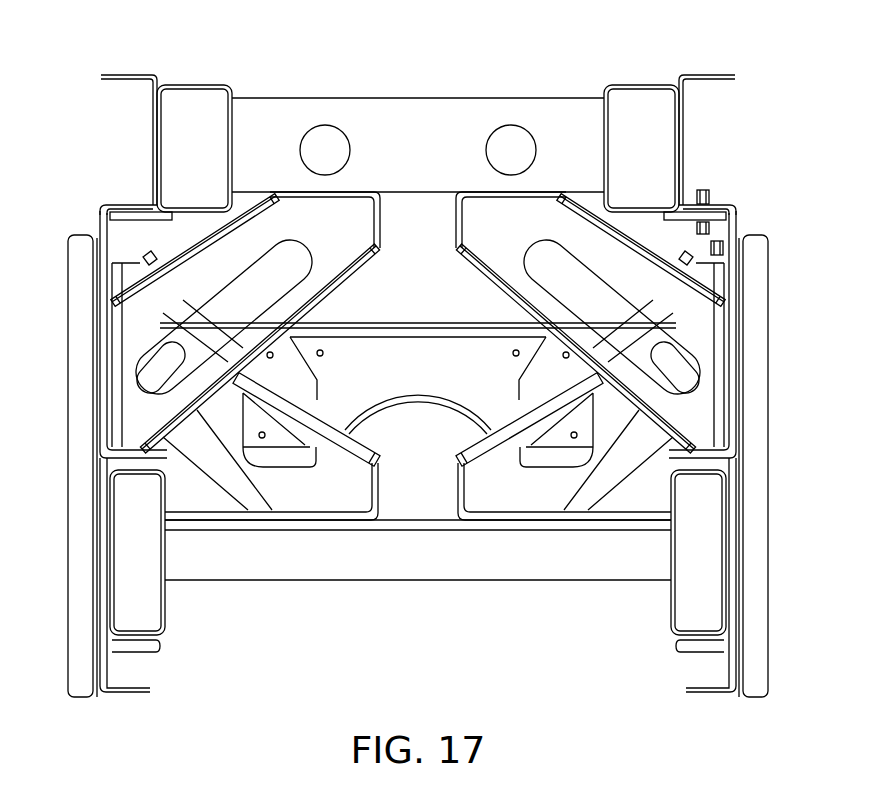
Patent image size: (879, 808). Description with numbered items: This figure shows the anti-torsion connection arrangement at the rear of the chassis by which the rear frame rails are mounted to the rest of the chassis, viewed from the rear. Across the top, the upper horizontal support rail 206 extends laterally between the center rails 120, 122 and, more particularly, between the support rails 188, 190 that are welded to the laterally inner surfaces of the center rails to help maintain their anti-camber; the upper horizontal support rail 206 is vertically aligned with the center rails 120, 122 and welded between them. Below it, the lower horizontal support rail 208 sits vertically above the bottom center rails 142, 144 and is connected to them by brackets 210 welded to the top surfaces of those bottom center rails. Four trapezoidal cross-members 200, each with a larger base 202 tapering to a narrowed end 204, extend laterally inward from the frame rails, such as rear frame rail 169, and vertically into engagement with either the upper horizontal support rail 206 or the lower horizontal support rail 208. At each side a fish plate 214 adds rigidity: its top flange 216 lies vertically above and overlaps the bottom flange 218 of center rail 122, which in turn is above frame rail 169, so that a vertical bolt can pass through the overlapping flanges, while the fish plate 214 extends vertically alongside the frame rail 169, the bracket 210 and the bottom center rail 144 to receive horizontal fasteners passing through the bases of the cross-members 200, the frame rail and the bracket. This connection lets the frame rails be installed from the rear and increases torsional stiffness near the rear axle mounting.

The center rail 120 is at (708, 75).
The center rail 122 is at (150, 75).
The bottom center rail 142 is at (710, 693).
The bottom center rail 144 is at (127, 697).
The rear frame rail 169 is at (103, 232).
The support rail 188 is at (632, 85).
The support rail 190 is at (205, 85).
The trapezoidal cross-member 200 is at (330, 262).
The larger base 202 is at (115, 290).
The narrowed end 204 is at (372, 182).
The upper horizontal support rail 206 is at (418, 98).
The lower horizontal support rail 208 is at (533, 580).
The bracket 210 is at (165, 618).
The fish plate 214 is at (68, 270).
The top flange 216 is at (118, 205).
The bottom flange 218 is at (140, 210).